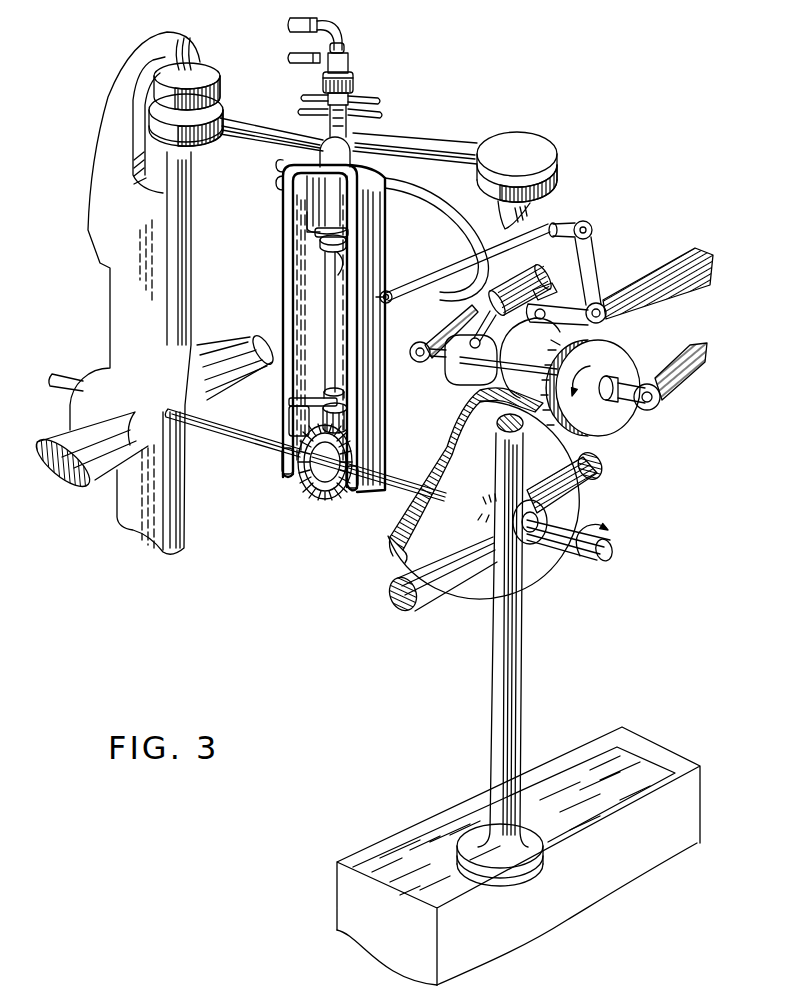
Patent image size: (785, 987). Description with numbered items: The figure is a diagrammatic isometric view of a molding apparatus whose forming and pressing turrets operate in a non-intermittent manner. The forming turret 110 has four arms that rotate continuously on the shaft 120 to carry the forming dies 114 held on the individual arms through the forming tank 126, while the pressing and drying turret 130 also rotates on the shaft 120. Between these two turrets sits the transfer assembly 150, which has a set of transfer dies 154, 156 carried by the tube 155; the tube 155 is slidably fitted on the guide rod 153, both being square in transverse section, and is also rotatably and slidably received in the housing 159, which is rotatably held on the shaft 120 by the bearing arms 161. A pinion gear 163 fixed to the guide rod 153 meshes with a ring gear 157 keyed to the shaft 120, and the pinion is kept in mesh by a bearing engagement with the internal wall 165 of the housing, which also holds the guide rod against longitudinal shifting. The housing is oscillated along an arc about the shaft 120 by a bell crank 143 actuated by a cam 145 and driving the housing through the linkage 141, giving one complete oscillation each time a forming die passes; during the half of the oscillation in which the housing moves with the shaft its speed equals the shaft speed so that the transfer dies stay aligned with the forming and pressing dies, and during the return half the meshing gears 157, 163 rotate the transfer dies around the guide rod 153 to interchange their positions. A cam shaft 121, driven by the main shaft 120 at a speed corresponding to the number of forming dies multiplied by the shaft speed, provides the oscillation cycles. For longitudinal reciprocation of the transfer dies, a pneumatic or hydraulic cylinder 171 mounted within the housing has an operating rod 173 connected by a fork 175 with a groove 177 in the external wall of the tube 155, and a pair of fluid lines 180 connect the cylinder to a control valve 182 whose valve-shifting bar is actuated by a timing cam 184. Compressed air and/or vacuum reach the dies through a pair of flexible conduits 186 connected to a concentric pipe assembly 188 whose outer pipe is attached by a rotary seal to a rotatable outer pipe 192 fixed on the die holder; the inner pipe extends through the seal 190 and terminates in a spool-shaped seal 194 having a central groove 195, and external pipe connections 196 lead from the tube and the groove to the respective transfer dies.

The forming turret 110 is at (476, 575).
The forming dies 114 is at (558, 183).
The shaft 120 is at (393, 478).
The cam shaft 121 is at (630, 424).
The forming tank 126 is at (640, 868).
The pressing and drying turret 130 is at (108, 318).
The linkage 141 is at (428, 272).
The bell crank 143 is at (593, 262).
The cam 145 is at (577, 328).
The transfer assembly 150 is at (267, 255).
The guide rod 153 is at (327, 375).
The transfer die 154 is at (208, 105).
The tube 155 is at (320, 154).
The transfer die 156 is at (507, 137).
The ring gear 157 is at (318, 494).
The housing 159 is at (385, 318).
The bearing arms 161 is at (283, 476).
The pinion gear 163 is at (347, 436).
The internal wall 165 is at (297, 403).
The pneumatic or hydraulic cylinder 171 is at (305, 193).
The operating rod 173 is at (314, 224).
The fork 175 is at (322, 243).
The groove 177 is at (342, 257).
The fluid lines 180 is at (283, 172).
The control valve 182 is at (534, 262).
The timing cam 184 is at (447, 385).
The flexible conduits 186 is at (300, 39).
The concentric pipe assembly 188 is at (352, 52).
The seal 190 is at (355, 72).
The rotatable outer pipe 192 is at (317, 97).
The spool-shaped seal 194 is at (327, 124).
The central groove 195 is at (355, 123).
The external pipe connections 196 is at (305, 100).